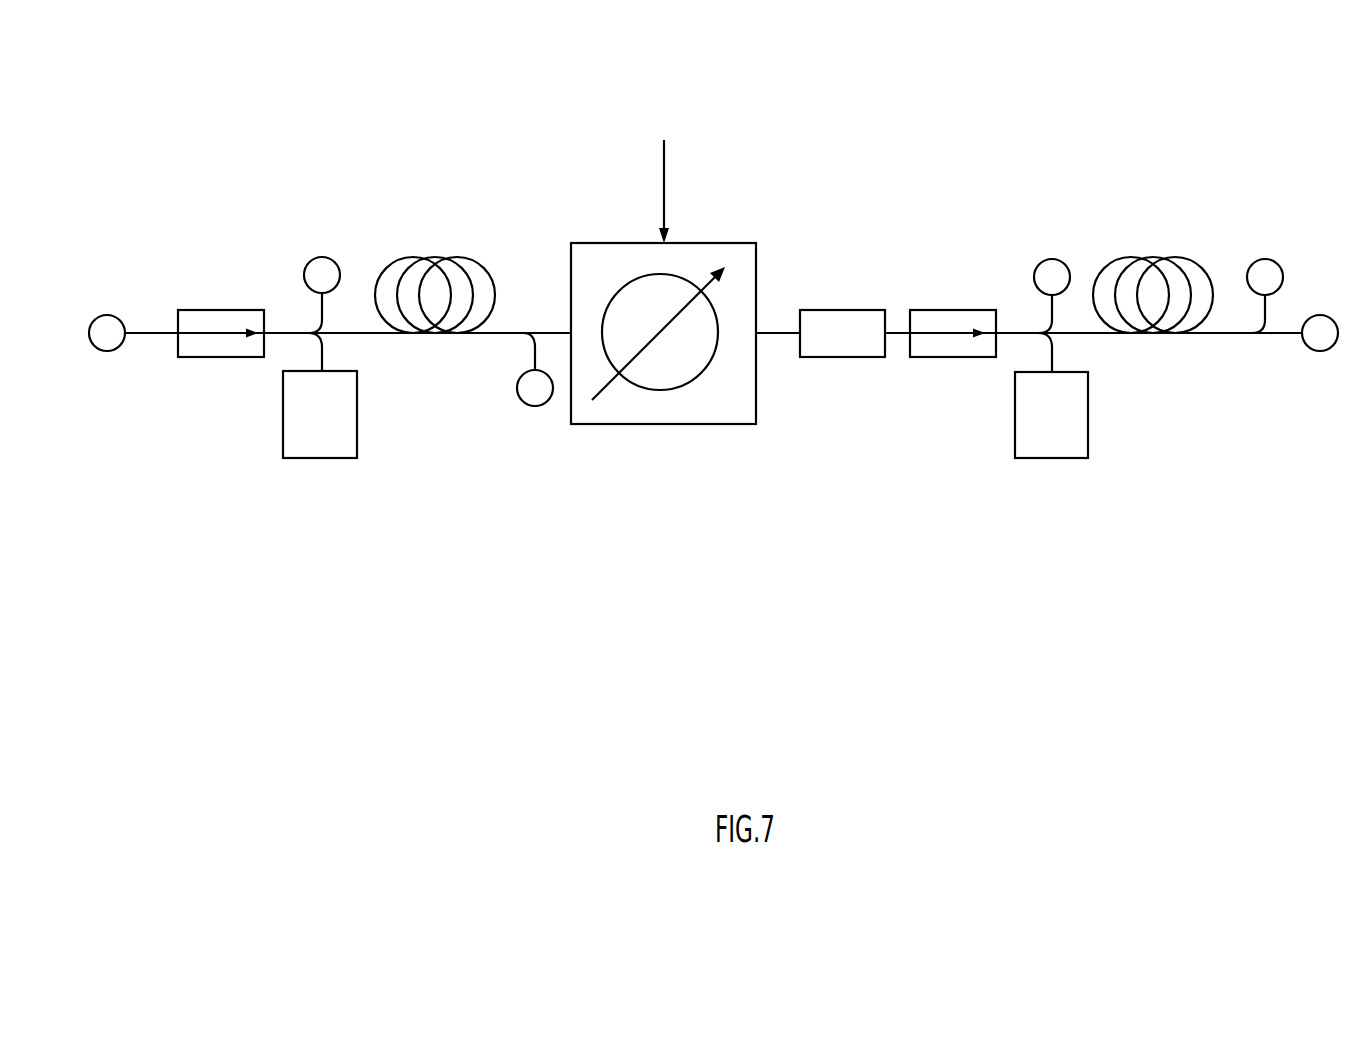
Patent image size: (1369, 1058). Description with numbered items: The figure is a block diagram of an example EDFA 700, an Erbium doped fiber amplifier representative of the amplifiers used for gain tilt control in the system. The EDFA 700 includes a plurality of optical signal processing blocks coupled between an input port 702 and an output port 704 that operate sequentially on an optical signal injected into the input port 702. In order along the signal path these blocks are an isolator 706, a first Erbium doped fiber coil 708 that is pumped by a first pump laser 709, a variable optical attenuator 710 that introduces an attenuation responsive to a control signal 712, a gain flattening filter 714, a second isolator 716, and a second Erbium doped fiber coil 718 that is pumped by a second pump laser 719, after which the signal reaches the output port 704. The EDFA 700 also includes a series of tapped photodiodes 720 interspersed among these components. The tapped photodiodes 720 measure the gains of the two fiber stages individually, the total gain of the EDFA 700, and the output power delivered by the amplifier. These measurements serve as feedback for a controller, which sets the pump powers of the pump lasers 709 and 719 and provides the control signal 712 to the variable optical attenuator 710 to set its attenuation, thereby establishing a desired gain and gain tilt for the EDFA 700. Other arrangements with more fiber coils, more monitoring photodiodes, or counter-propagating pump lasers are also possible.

The EDFA 700 is at (970, 126).
The input port 702 is at (97, 315).
The output port 704 is at (1330, 315).
The isolator 706 is at (213, 358).
The first Erbium doped fiber coil 708 is at (495, 285).
The first pump laser 709 is at (322, 459).
The variable optical attenuator 710 is at (733, 424).
The control signal 712 is at (664, 187).
The gain flattening filter 714 is at (842, 310).
The isolator 716 is at (950, 358).
The second Erbium doped fiber coil 718 is at (1115, 272).
The second pump laser 719 is at (1035, 459).
The tapped photodiodes 720 is at (1265, 277).